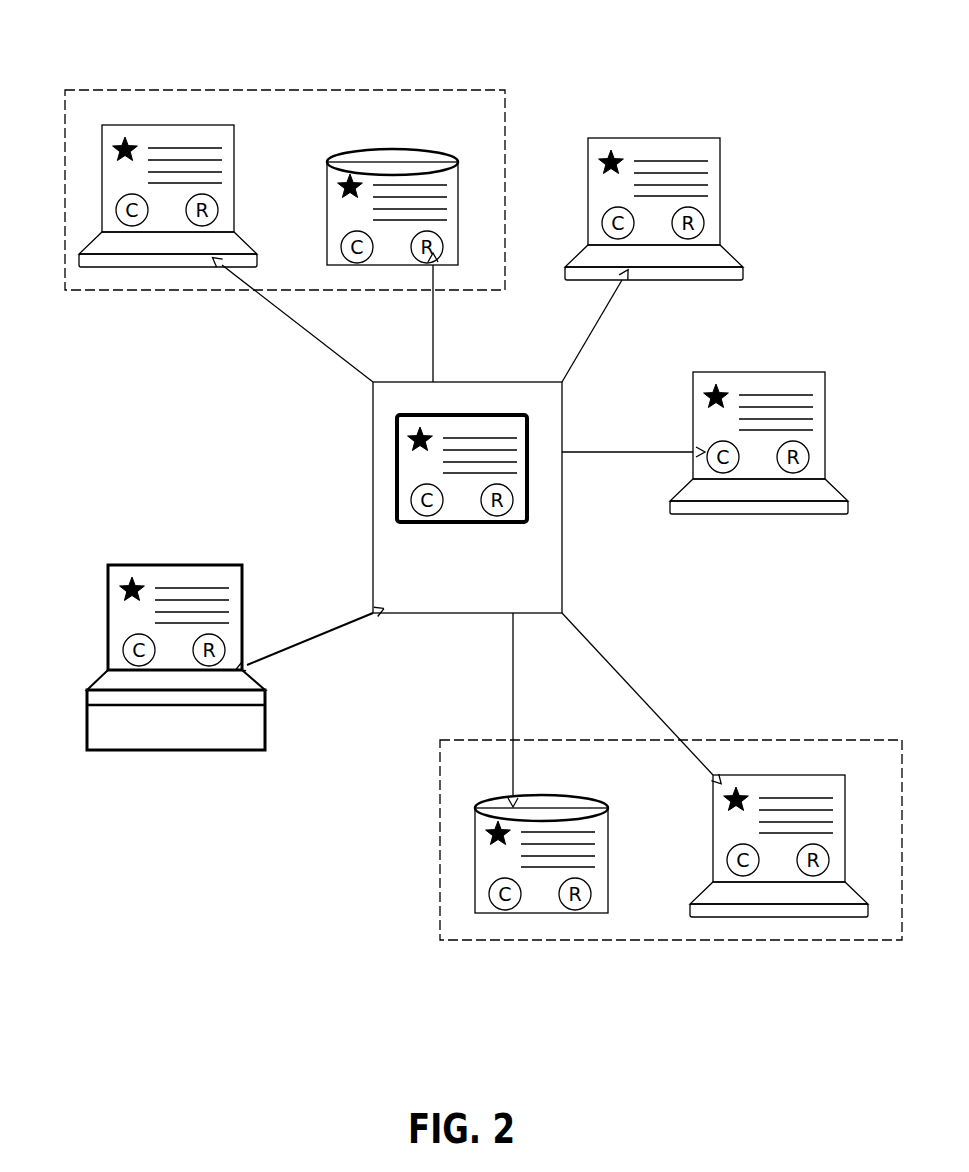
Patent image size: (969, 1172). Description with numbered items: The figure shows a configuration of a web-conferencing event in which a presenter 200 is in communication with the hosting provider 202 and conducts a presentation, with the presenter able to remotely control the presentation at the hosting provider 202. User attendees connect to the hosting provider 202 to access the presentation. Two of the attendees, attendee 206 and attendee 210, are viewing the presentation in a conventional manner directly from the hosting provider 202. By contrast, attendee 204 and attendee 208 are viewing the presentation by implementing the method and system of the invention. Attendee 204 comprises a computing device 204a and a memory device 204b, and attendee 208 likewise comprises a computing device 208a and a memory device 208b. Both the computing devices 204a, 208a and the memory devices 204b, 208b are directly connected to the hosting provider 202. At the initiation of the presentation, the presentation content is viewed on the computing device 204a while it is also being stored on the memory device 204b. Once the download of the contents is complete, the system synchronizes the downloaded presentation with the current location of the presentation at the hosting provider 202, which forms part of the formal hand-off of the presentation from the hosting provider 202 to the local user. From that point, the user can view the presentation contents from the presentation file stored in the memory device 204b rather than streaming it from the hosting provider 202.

The presenter 200 is at (180, 565).
The hosting provider 202 is at (373, 458).
The attendee 204 is at (270, 90).
The computing device 204a is at (100, 120).
The memory device 204b is at (410, 138).
The attendee 206 is at (720, 245).
The attendee 208 is at (652, 937).
The computing device 208a is at (760, 917).
The memory device 208b is at (510, 913).
The attendee 210 is at (740, 512).